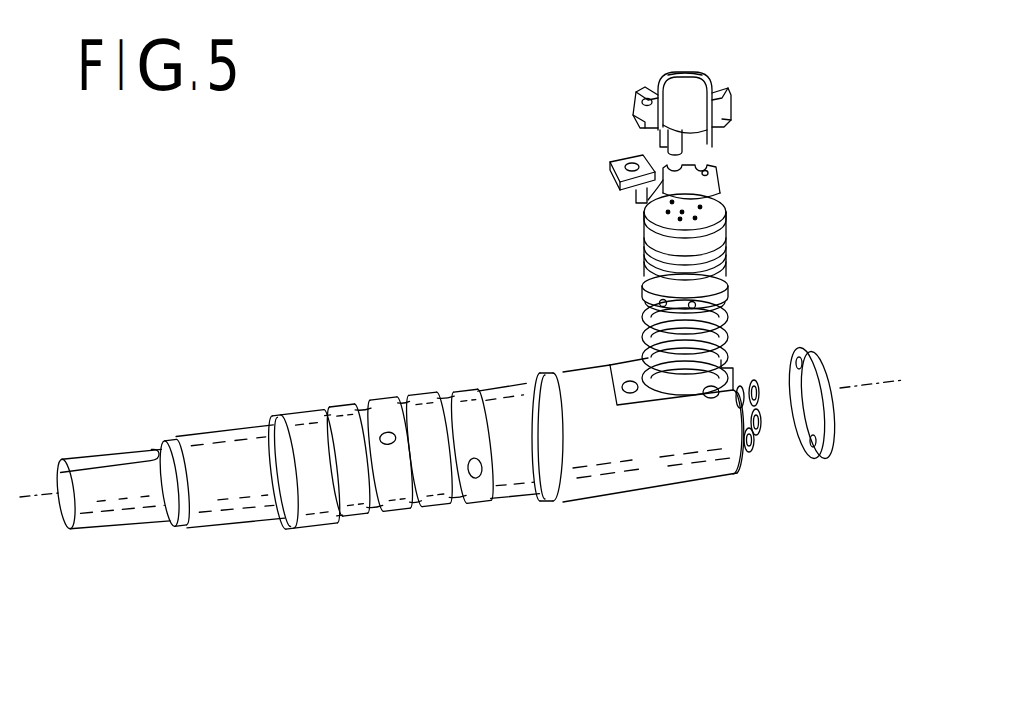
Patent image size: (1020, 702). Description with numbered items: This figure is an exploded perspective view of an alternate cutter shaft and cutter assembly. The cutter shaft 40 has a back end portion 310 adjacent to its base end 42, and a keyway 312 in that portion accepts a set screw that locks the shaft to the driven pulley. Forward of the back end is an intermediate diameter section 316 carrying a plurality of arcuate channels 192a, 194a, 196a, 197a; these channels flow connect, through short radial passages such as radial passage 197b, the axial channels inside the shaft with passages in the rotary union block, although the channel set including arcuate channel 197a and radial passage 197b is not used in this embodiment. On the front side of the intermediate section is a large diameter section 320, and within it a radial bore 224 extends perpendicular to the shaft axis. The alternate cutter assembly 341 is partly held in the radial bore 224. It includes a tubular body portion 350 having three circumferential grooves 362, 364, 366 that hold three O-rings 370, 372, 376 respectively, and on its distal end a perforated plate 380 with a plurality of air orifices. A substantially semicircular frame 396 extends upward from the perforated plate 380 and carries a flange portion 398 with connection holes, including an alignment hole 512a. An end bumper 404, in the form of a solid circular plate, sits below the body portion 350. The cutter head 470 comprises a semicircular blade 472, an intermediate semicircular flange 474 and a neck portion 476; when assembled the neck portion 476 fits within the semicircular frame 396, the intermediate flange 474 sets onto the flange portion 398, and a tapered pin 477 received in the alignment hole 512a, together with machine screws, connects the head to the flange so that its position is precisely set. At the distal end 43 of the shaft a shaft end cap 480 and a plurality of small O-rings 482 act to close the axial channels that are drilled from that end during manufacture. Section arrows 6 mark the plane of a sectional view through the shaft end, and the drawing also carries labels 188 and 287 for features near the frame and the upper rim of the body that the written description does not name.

The section line 6- 6 is at (24, 462).
The cutter shaft 40 is at (633, 468).
The base end 42 is at (64, 508).
The distal end 43 is at (743, 467).
The upper rim 188 is at (652, 218).
The arcuate channel 192a is at (427, 508).
The arcuate channel 194a is at (345, 515).
The arcuate channel 196a is at (470, 505).
The arcuate channel 197a is at (387, 518).
The short radial passage 197b is at (382, 430).
The radial bore 224 is at (720, 390).
The hole 287 is at (606, 170).
The back end portion 310 is at (120, 508).
The keyway 312 is at (103, 460).
The intermediate diameter section 316 is at (322, 528).
The large diameter section 320 is at (588, 500).
The cutter assembly 341 is at (768, 173).
The tubular body portion 350 is at (727, 265).
The circumferential groove 362 is at (727, 228).
The circumferential groove 364 is at (727, 245).
The circumferential groove 366 is at (727, 287).
The O-ring 370 is at (643, 287).
The O-ring 372 is at (643, 335).
The O-ring 376 is at (645, 366).
The perforated plate 380 is at (667, 222).
The semicircular frame 396 is at (630, 199).
The flange portion 398 is at (712, 172).
The end bumper 404 is at (723, 372).
The cutter head 470 is at (708, 68).
The semicircular blade 472 is at (682, 70).
The intermediate semicircular flange 474 is at (630, 108).
The neck portion 476 is at (650, 145).
The tapered pin 477 is at (707, 150).
The shaft end cap 480 is at (833, 415).
The small O-rings 482 is at (763, 392).
The alignment hole 512a is at (700, 212).